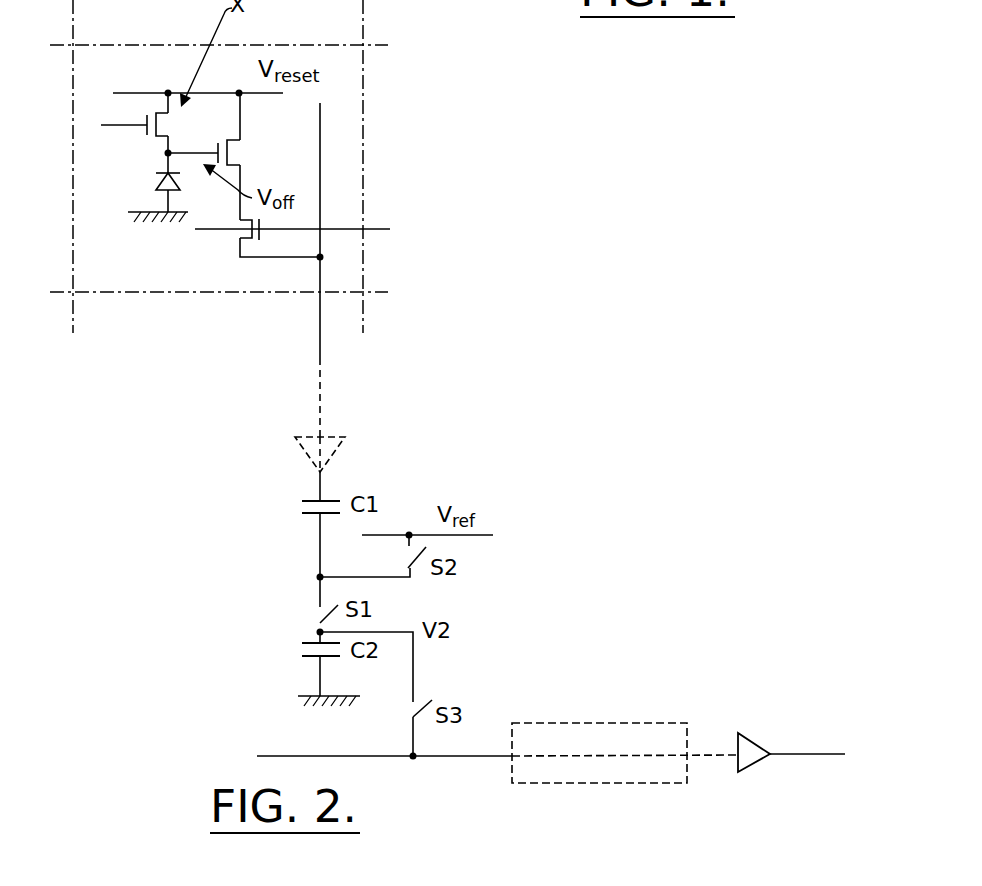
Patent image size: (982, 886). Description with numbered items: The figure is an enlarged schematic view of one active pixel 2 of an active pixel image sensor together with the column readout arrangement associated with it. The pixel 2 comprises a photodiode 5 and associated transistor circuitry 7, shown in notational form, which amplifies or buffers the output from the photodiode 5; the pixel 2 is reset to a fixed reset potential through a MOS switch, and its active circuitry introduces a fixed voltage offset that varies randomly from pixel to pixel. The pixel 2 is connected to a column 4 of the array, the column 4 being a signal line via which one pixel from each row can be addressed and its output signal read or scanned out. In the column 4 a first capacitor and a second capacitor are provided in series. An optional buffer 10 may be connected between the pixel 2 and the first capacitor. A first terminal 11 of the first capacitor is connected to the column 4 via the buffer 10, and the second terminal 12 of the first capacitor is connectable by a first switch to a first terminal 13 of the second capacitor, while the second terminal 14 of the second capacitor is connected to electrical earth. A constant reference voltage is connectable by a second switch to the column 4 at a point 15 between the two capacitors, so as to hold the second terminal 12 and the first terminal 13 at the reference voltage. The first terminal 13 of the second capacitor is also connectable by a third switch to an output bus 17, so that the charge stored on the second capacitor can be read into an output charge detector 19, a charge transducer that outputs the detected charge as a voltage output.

The active pixel 2 is at (338, 143).
The column 4 is at (320, 337).
The photodiode 5 is at (145, 185).
The transistor circuitry 7 is at (204, 122).
The buffer 10 is at (302, 433).
The first terminal of C1 11 is at (312, 499).
The second terminal of C1 12 is at (311, 516).
The first terminal of C2 13 is at (316, 639).
The second terminal of C2 14 is at (311, 659).
The connection point 15 is at (318, 576).
The output bus 17 is at (625, 730).
The output charge detector 19 is at (802, 762).